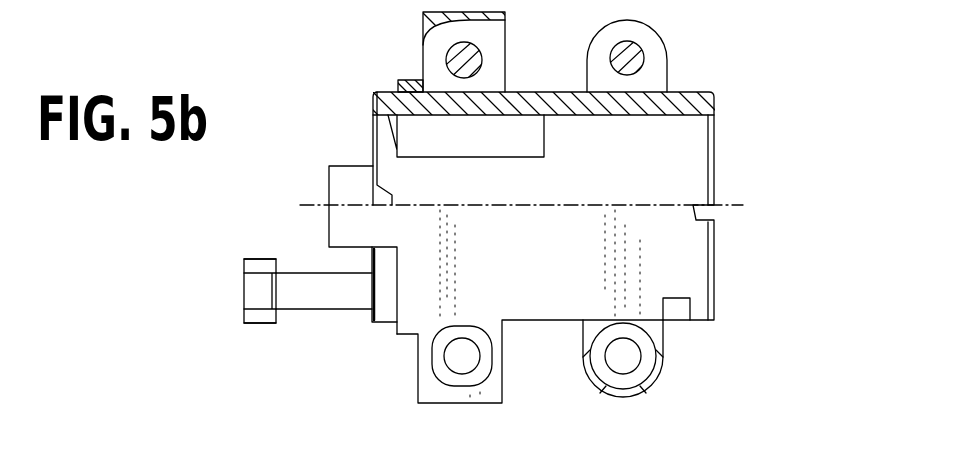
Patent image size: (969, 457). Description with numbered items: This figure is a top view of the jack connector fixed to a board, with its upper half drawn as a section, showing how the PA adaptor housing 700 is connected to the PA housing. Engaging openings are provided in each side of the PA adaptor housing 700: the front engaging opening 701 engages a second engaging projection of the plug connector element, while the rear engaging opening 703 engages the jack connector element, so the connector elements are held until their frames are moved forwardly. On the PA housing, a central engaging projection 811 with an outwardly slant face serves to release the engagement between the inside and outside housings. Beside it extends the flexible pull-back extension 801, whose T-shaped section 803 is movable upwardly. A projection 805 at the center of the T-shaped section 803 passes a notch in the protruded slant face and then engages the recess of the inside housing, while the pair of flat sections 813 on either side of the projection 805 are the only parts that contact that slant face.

The PA adaptor housing 700 is at (672, 274).
The front engaging opening 701 is at (400, 83).
The rear engaging opening 703 is at (683, 100).
The pull-back extension 801 is at (333, 298).
The T-shaped section 803 is at (241, 315).
The projection 805 is at (262, 297).
The central engaging projection 811 is at (345, 192).
The flat section 813 is at (255, 270).